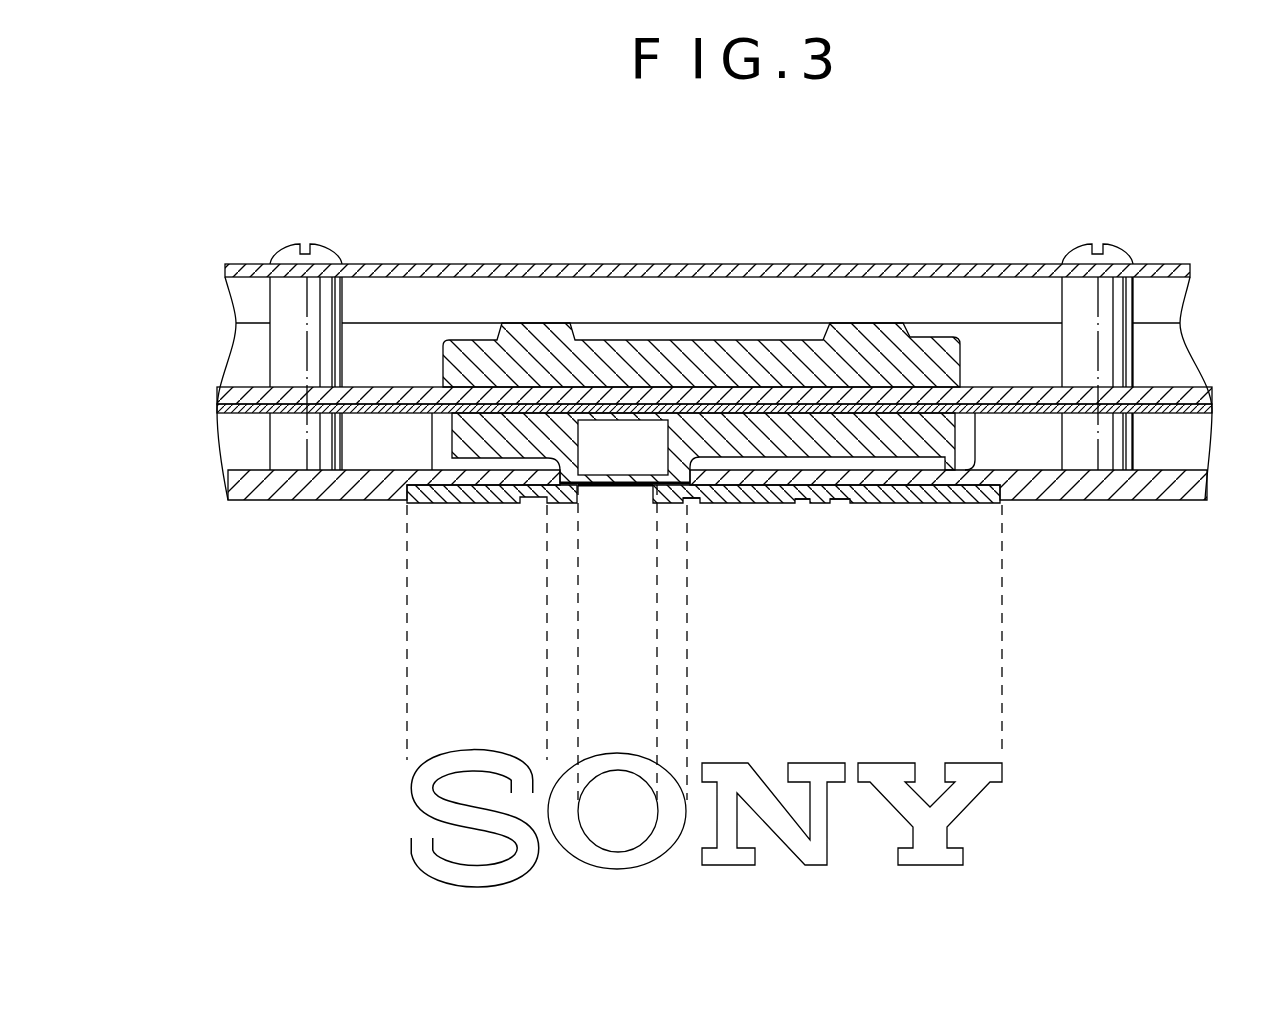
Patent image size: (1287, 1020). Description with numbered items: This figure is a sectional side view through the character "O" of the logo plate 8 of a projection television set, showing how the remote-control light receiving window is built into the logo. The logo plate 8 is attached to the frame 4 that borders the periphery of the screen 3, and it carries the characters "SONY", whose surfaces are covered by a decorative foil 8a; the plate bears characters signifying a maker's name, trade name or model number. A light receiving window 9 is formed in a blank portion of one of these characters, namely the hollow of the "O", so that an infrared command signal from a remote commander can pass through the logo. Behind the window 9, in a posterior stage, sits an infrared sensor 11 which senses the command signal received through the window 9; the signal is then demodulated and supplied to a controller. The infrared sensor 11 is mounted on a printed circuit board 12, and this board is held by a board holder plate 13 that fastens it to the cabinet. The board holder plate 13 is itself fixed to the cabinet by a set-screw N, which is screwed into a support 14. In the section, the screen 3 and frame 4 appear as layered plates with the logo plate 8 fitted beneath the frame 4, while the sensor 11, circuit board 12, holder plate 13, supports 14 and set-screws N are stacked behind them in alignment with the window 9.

The screen 3 is at (1212, 406).
The frame 4 is at (1190, 487).
The logo plate 8 is at (1002, 492).
The decorative foil 8a is at (838, 505).
The light receiving window 9 is at (625, 498).
The infrared sensor 11 is at (603, 463).
The printed circuit board 12 is at (537, 333).
The board holder plate 13 is at (748, 264).
The support 14 is at (268, 303).
The set-screw N is at (318, 250).